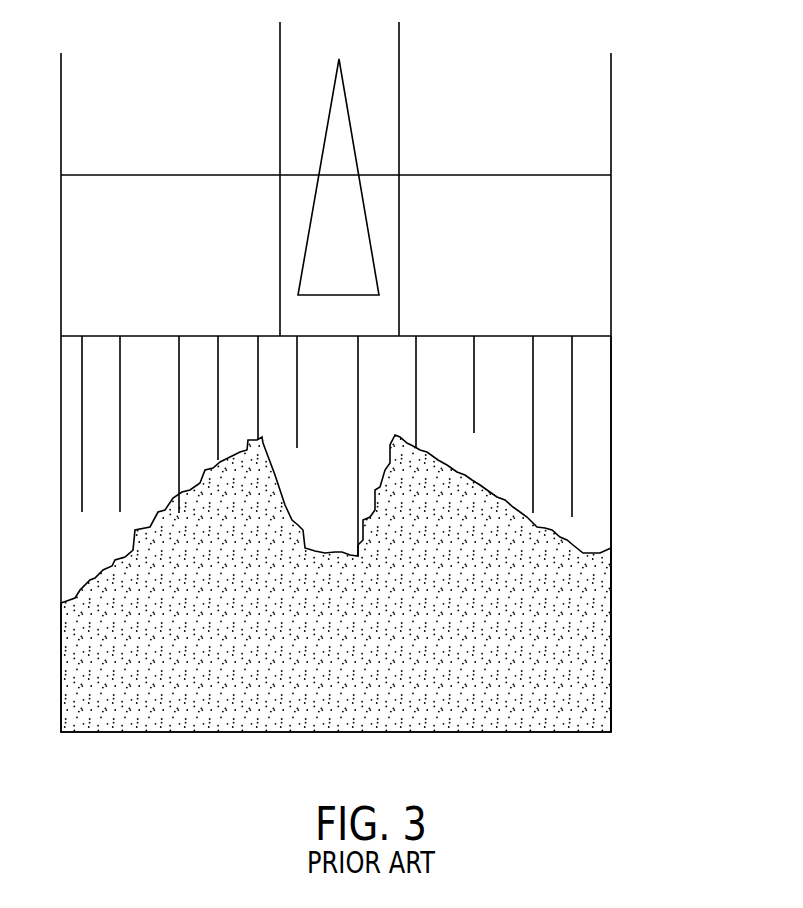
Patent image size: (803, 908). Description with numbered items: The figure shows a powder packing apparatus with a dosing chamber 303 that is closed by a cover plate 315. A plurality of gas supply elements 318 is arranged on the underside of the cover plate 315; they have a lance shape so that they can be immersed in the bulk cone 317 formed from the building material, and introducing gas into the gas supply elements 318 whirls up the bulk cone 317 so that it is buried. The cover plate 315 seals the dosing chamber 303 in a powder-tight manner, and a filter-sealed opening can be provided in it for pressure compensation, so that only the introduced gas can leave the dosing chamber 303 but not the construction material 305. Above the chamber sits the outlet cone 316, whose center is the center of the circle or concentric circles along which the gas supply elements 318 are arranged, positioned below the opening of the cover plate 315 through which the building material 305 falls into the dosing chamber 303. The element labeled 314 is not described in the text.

The dosing chamber 303 is at (611, 513).
The construction material 305 is at (611, 548).
The inner partition walls 314 is at (399, 45).
The cover plate 315 is at (597, 212).
The outlet cone 316 is at (362, 167).
The bulk cone 317 is at (253, 492).
The gas supply elements 318 is at (297, 448).